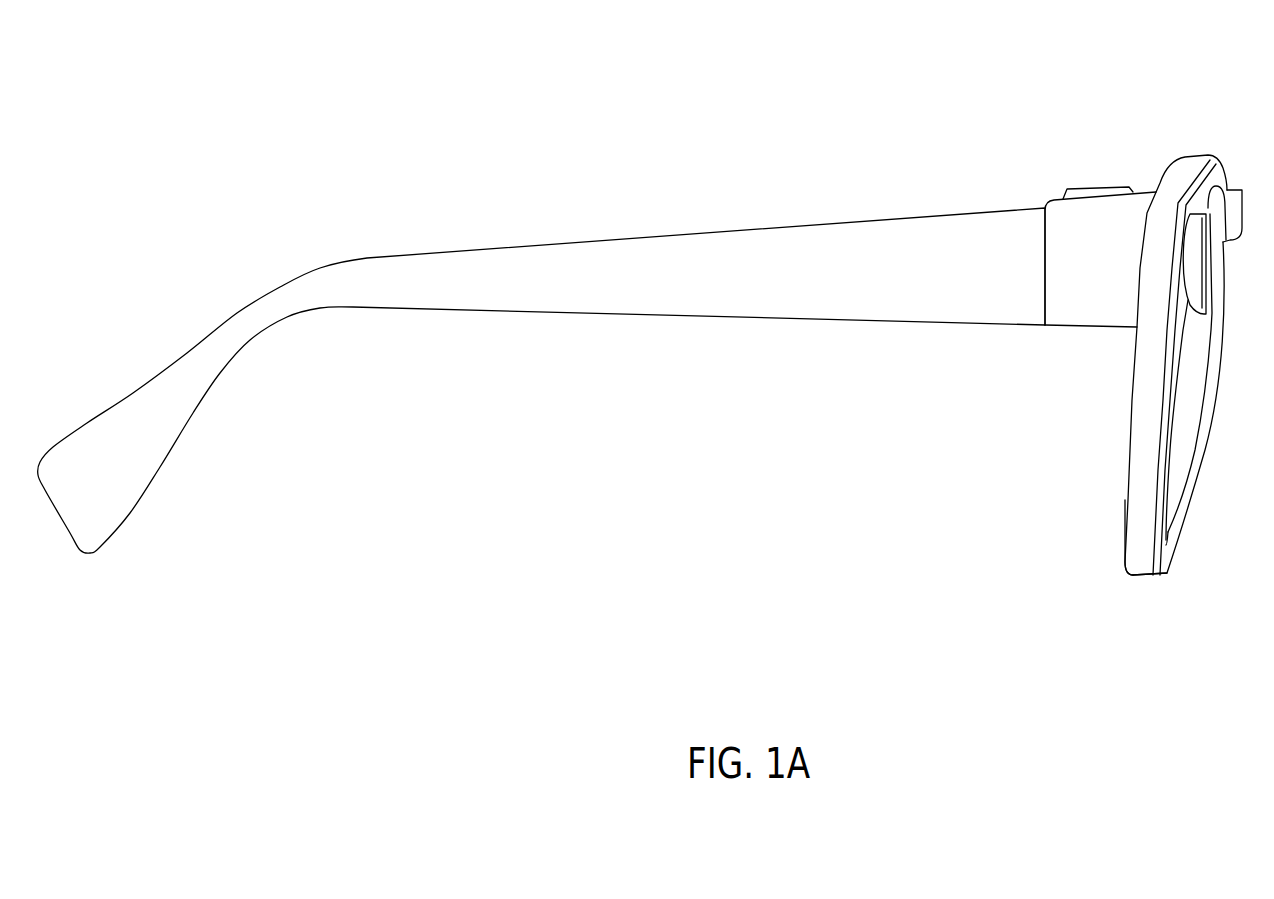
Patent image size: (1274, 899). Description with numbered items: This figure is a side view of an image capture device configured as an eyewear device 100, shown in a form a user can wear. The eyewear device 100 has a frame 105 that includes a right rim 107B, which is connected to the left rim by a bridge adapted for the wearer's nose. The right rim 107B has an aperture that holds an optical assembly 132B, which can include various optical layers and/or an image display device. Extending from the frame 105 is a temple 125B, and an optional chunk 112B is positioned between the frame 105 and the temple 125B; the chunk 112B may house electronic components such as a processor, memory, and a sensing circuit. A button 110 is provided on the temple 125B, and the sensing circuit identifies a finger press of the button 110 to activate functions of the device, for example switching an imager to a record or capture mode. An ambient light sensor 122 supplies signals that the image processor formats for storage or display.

The eyewear device 100 is at (678, 96).
The frame 105 is at (1202, 157).
The right rim 107B is at (1133, 560).
The button 110 is at (1098, 205).
The chunk 112B is at (1077, 313).
The ambient light sensor 122 is at (1200, 262).
The temple 125B is at (381, 257).
The optical assembly 132B is at (1185, 445).